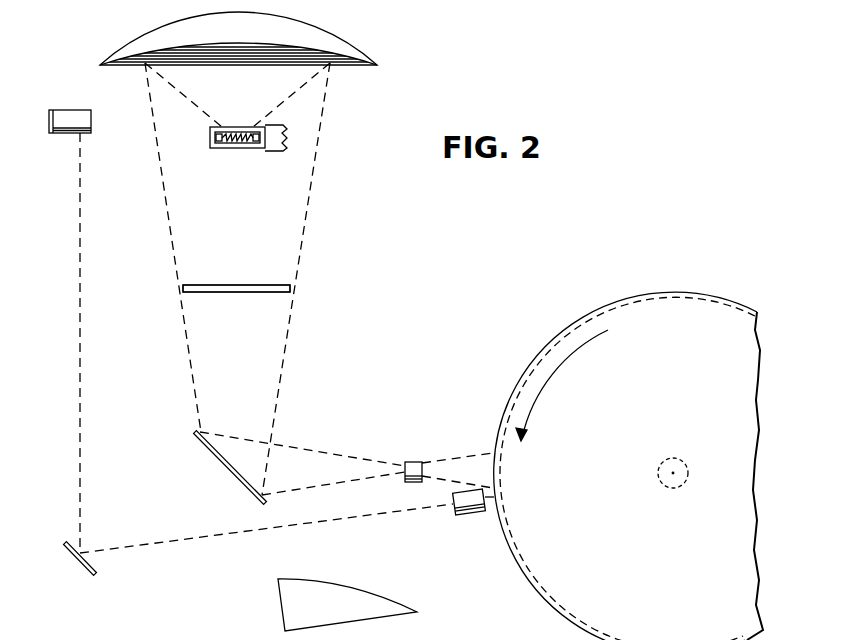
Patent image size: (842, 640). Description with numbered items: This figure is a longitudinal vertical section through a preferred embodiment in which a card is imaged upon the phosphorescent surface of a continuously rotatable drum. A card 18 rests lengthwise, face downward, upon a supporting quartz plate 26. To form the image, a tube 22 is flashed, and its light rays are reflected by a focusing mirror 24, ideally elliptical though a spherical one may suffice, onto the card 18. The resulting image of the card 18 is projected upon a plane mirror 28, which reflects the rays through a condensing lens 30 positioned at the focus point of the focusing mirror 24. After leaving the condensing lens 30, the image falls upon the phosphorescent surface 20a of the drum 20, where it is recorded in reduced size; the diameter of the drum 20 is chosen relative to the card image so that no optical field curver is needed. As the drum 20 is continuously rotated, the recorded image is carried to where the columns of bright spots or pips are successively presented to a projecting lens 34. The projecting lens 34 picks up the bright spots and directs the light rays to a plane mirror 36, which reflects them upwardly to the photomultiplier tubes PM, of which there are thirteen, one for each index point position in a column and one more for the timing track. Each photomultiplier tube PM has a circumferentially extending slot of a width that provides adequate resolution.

The focusing mirror 24 is at (306, 26).
The tube 22 is at (231, 148).
The photomultiplier tube PM is at (74, 113).
The card 18 is at (231, 285).
The supporting quartz plate 26 is at (261, 292).
The plane mirror 28 is at (222, 465).
The plane mirror 36 is at (78, 563).
The condensing lens 30 is at (415, 462).
The projecting lens 34 is at (467, 513).
The drum 20 is at (663, 300).
The phosphorescent surface 20a is at (540, 352).